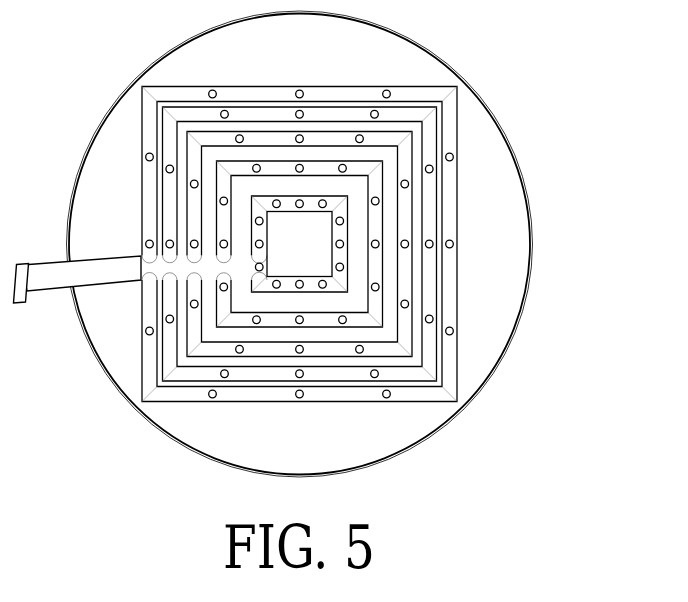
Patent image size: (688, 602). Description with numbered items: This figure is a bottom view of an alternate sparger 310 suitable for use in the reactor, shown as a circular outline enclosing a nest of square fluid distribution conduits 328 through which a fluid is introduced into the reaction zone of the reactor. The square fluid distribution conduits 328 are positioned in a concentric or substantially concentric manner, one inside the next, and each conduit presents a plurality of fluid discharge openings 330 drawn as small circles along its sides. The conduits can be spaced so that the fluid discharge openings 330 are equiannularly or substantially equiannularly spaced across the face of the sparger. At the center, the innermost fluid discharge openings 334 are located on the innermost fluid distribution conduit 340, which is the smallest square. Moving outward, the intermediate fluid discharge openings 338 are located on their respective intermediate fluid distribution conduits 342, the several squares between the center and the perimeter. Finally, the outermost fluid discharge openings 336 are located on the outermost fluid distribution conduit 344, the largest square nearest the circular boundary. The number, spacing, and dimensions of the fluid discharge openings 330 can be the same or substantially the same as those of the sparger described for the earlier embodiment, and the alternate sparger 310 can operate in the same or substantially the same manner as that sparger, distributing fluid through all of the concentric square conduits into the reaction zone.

The alternate sparger 310 is at (407, 60).
The square fluid distribution conduits 328 is at (457, 122).
The fluid discharge openings 330 is at (454, 159).
The innermost fluid discharge openings 334 is at (337, 245).
The outermost fluid discharge openings 336 is at (454, 246).
The intermediate fluid discharge openings 338 is at (377, 242).
The innermost fluid distribution conduit 340 is at (344, 266).
The intermediate fluid distribution conduits 342 is at (379, 286).
The outermost fluid distribution conduit 344 is at (454, 329).